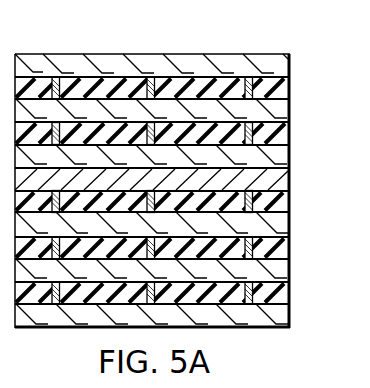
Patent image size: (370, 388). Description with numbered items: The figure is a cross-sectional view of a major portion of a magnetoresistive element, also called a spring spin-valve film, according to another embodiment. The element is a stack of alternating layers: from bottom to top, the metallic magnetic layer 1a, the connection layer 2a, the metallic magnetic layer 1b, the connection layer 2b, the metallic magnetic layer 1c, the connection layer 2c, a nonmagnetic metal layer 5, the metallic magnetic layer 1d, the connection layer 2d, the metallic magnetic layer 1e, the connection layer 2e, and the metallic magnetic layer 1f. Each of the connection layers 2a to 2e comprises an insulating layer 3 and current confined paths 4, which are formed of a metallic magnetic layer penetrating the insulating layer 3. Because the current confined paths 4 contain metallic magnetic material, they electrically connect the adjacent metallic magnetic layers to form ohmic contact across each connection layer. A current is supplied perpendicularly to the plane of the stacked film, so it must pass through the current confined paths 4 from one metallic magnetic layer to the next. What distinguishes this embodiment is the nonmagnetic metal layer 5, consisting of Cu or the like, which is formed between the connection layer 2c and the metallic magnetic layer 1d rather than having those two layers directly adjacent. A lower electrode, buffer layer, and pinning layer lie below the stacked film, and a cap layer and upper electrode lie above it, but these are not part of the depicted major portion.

The metallic magnetic layer 1a is at (284, 316).
The metallic magnetic layer 1b is at (284, 270).
The metallic magnetic layer 1c is at (284, 226).
The metallic magnetic layer 1d is at (280, 158).
The metallic magnetic layer 1e is at (280, 111).
The metallic magnetic layer 1f is at (280, 63).
The connection layer 2a is at (280, 294).
The connection layer 2b is at (280, 249).
The connection layer 2c is at (280, 206).
The connection layer 2d is at (284, 133).
The connection layer 2e is at (193, 49).
The insulating layer 3 is at (193, 77).
The current confined paths 4 is at (150, 77).
The nonmagnetic metal layer 5 is at (284, 178).